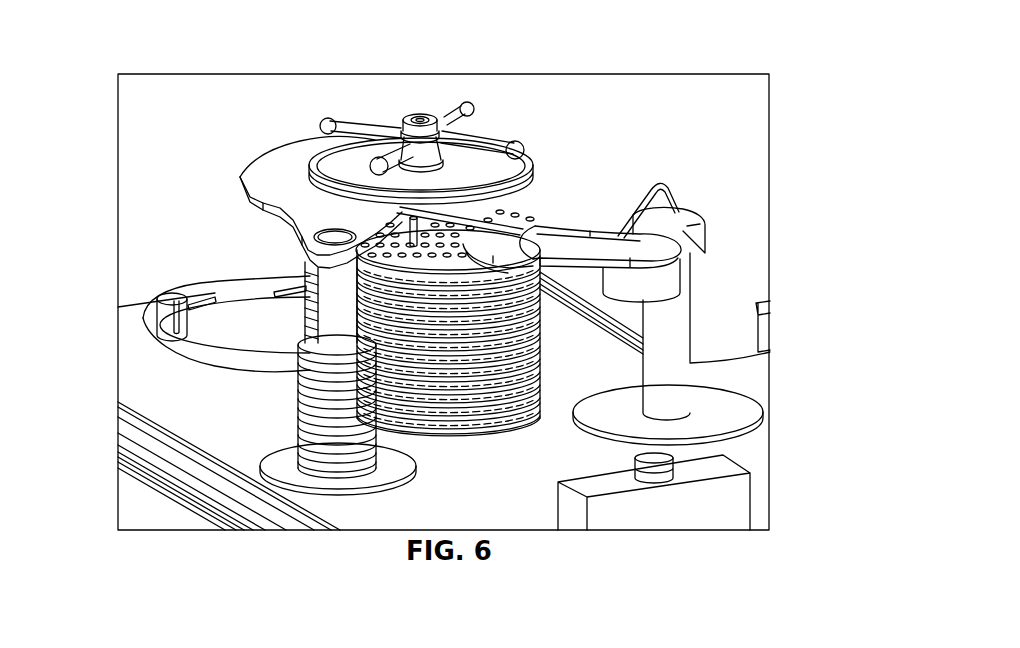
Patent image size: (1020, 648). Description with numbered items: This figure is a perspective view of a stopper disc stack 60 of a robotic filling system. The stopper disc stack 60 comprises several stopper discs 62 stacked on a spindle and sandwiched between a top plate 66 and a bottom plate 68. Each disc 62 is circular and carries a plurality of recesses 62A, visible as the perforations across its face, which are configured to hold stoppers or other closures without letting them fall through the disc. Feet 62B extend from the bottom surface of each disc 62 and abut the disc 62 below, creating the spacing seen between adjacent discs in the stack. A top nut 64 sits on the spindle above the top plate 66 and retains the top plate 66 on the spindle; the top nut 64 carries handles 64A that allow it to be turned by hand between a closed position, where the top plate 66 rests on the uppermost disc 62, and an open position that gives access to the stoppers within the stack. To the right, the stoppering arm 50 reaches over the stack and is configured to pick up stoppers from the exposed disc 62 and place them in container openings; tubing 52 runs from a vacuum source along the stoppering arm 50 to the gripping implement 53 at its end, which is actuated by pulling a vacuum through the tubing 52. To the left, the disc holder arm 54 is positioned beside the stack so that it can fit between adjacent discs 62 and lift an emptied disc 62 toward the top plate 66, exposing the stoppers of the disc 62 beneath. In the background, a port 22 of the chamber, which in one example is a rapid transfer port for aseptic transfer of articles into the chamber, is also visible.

The port 22 is at (167, 342).
The stoppering arm 50 is at (697, 222).
The tubing 52 is at (666, 183).
The gripping implement 53 is at (396, 257).
The disc holder arm 54 is at (253, 176).
The stopper disc stack 60 is at (510, 326).
The stopper disc 62 is at (428, 424).
The recess 62A is at (400, 258).
The foot 62B is at (451, 428).
The top nut 64 is at (396, 124).
The handle 64A is at (463, 100).
The top plate 66 is at (518, 178).
The bottom plate 68 is at (527, 402).